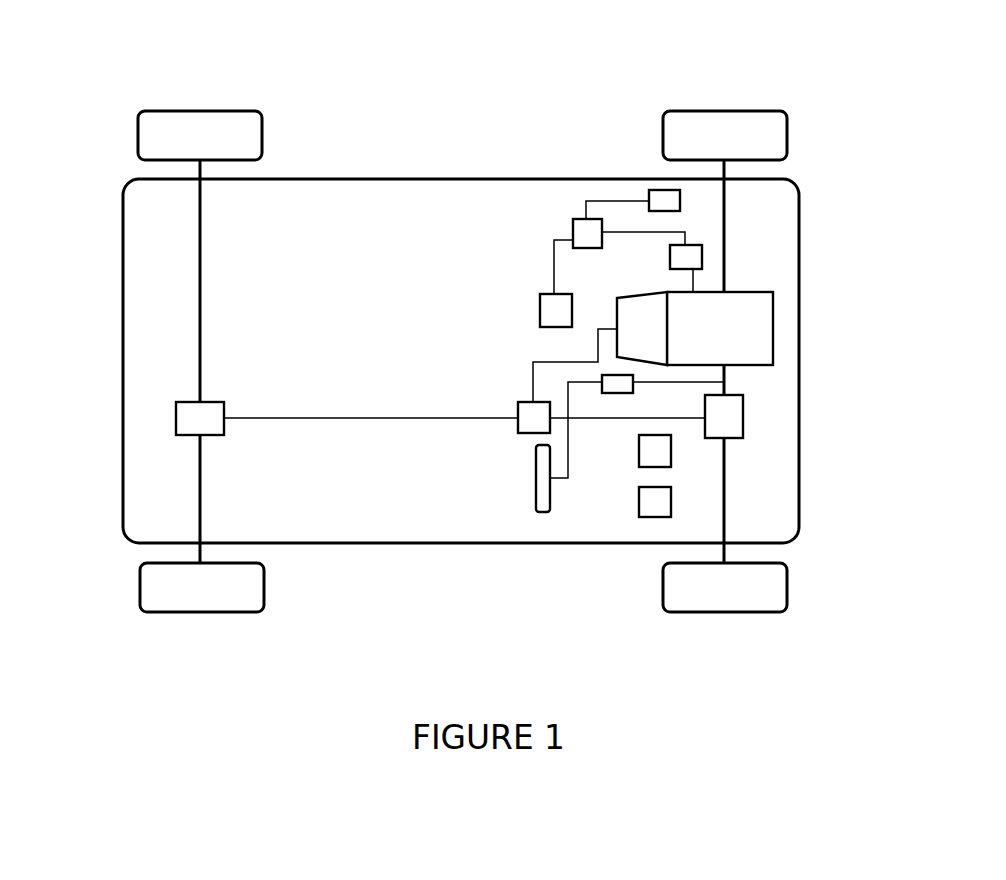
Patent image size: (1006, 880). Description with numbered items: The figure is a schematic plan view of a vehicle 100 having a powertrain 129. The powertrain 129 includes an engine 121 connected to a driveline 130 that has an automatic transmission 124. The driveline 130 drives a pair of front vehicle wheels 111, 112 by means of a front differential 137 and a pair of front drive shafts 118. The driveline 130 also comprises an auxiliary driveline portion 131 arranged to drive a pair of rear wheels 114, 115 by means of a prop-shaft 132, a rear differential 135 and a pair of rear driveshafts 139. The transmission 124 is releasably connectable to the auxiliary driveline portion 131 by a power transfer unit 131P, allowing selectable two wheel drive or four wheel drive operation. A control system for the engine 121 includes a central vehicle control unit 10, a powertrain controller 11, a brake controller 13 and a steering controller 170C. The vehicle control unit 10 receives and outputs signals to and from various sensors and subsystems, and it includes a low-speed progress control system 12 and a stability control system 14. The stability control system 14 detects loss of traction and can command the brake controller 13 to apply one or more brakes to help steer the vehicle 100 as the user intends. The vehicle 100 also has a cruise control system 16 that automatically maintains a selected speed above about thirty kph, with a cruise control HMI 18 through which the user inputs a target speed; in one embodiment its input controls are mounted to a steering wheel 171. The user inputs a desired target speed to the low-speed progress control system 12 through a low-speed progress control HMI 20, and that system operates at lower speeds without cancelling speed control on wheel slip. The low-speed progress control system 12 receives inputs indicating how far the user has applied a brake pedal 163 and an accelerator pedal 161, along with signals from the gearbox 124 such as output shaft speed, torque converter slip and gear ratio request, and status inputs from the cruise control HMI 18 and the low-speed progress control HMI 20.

The vehicle 100 is at (924, 126).
The vehicle control unit 10 is at (535, 138).
The low-speed progress control system 12 is at (535, 138).
The stability control system 14 is at (535, 138).
The cruise control system 16 is at (578, 222).
The cruise control HMI 18 is at (507, 217).
The low-speed progress control HMI 20 is at (552, 305).
The brake controller 13 is at (658, 200).
The powertrain controller 11 is at (695, 258).
The automatic transmission 124 is at (640, 307).
The engine 121 is at (748, 317).
The front vehicle wheel 111 is at (768, 128).
The front vehicle wheel 112 is at (768, 597).
The rear wheel 114 is at (173, 132).
The rear wheel 115 is at (165, 593).
The front drive shafts 118 is at (724, 218).
The rear driveshafts 139 is at (200, 262).
The powertrain 129 is at (922, 356).
The driveline 130 is at (895, 525).
The auxiliary driveline portion 131 is at (368, 588).
The prop-shaft 132 is at (337, 418).
The rear differential 135 is at (176, 420).
The front differential 137 is at (737, 416).
The power transfer unit 131P is at (526, 427).
The steering controller 170C is at (617, 390).
The brake pedal 163 is at (625, 515).
The accelerator pedal 161 is at (653, 508).
The steering wheel 171 is at (545, 507).